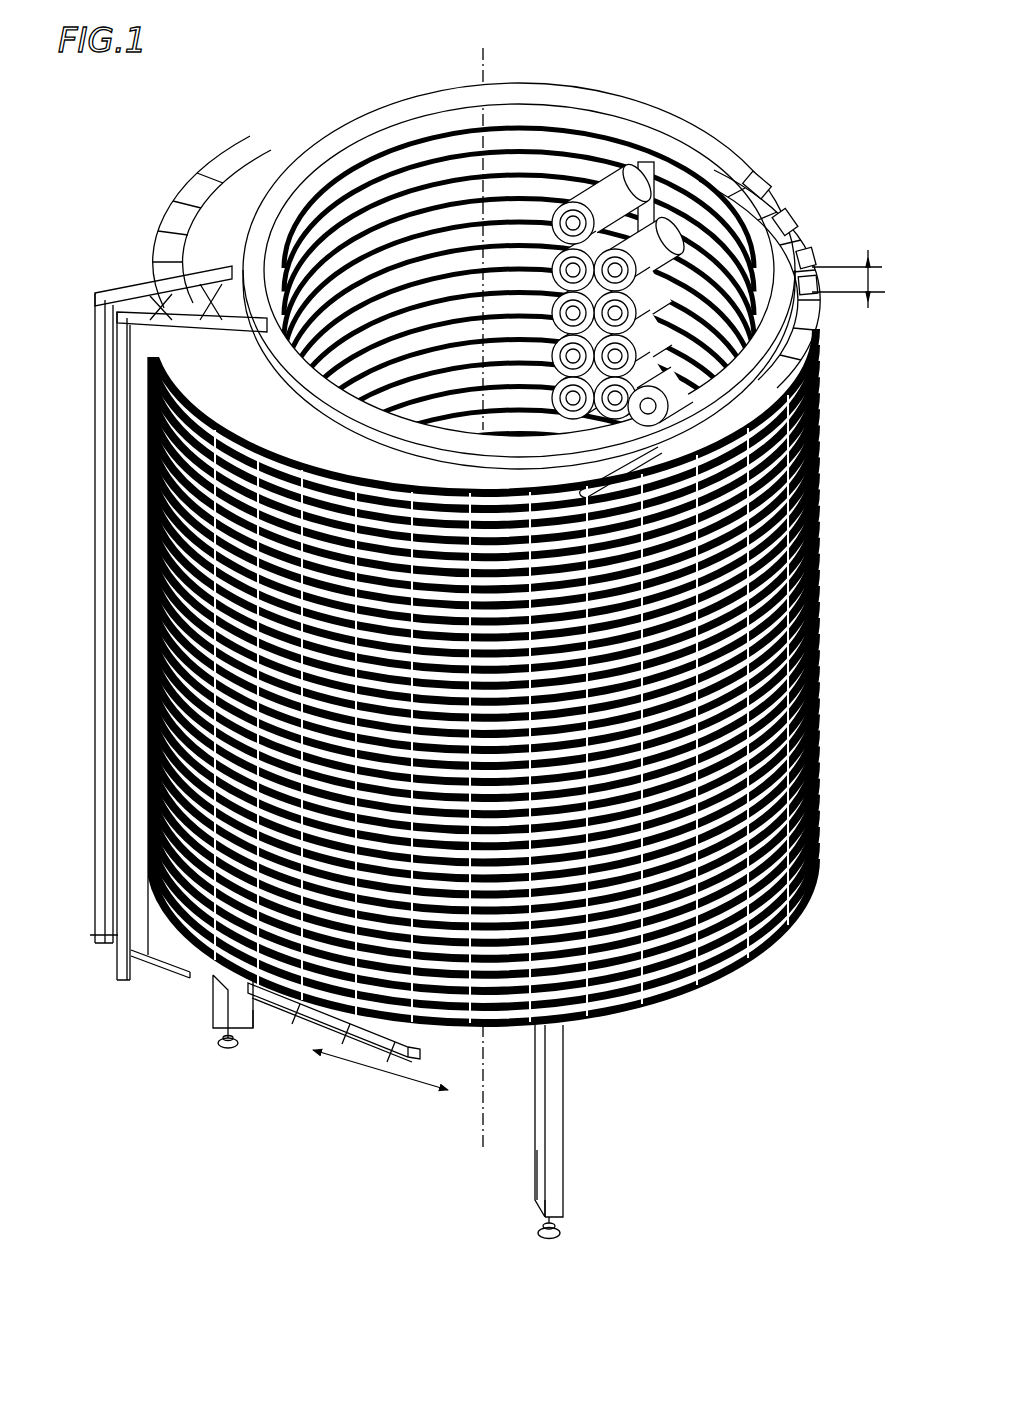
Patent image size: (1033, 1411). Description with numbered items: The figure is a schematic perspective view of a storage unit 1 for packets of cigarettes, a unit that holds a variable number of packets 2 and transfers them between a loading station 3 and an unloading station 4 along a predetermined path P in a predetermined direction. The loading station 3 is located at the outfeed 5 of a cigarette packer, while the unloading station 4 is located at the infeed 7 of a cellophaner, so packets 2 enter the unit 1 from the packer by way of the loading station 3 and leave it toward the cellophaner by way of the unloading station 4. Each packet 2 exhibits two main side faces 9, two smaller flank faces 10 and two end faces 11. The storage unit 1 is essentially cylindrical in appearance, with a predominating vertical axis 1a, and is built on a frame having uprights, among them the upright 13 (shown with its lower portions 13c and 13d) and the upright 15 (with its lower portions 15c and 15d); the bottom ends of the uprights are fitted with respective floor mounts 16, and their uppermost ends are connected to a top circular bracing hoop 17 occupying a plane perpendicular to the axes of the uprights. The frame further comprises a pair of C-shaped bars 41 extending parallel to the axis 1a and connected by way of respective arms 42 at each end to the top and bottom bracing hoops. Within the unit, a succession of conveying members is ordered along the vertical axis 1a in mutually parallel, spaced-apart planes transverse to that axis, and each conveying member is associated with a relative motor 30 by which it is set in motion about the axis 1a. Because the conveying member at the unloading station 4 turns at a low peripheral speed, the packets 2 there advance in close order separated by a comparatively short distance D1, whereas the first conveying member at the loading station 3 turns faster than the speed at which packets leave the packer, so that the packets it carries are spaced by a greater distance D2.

The storage unit 1 is at (640, 82).
The vertical axis 1a is at (482, 55).
The packets 2 is at (800, 207).
The loading station 3 is at (818, 423).
The unloading station 4 is at (298, 1028).
The outfeed 5 is at (705, 598).
The infeed 7 is at (377, 1062).
The main side faces 9 is at (800, 200).
The flank faces 10 is at (737, 172).
The end faces 11 is at (774, 208).
The upright 13 is at (225, 1007).
The leg foot portion 13c is at (227, 1012).
The leg lower portion 13d is at (258, 1018).
The upright 15 is at (568, 1110).
The leg tube 15c is at (537, 1175).
The leg lower end 15d is at (545, 1215).
The floor mounts 16 is at (223, 1050).
The top circular bracing hoop 17 is at (574, 102).
The motor 30 is at (607, 183).
The C-shaped bars 41 is at (140, 392).
The arms 42 is at (222, 182).
The short distance between packets D1 is at (380, 1074).
The distance between packets D2 is at (860, 287).
The predetermined path P is at (730, 988).